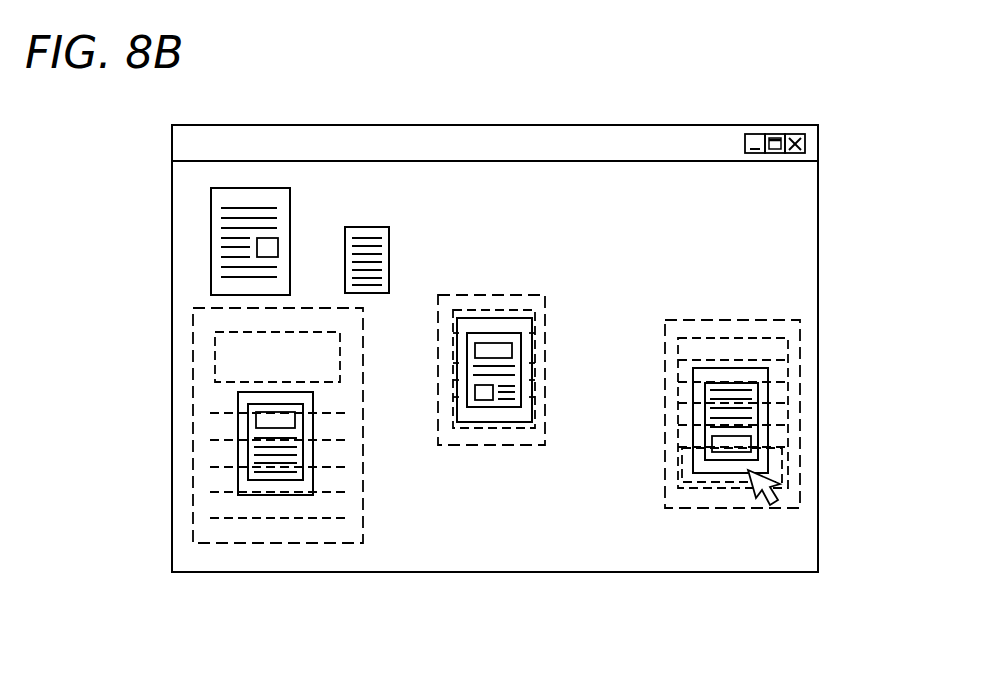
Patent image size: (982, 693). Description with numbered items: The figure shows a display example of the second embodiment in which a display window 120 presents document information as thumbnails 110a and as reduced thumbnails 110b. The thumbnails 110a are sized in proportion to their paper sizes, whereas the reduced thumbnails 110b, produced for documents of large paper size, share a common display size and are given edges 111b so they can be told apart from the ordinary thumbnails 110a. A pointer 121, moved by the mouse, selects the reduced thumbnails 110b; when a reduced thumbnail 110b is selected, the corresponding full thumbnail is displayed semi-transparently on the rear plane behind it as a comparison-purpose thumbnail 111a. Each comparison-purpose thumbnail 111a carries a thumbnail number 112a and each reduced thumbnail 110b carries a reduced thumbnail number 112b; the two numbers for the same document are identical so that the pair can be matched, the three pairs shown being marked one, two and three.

The display window 120 is at (818, 212).
The thumbnail 110a is at (251, 188).
The reduced thumbnail 110b is at (240, 447).
The comparison-purpose thumbnail 111a is at (281, 543).
The edge 111b is at (240, 487).
The thumbnail number 112a is at (352, 318).
The reduced thumbnail number 112b is at (307, 398).
The pointer 121 is at (778, 496).